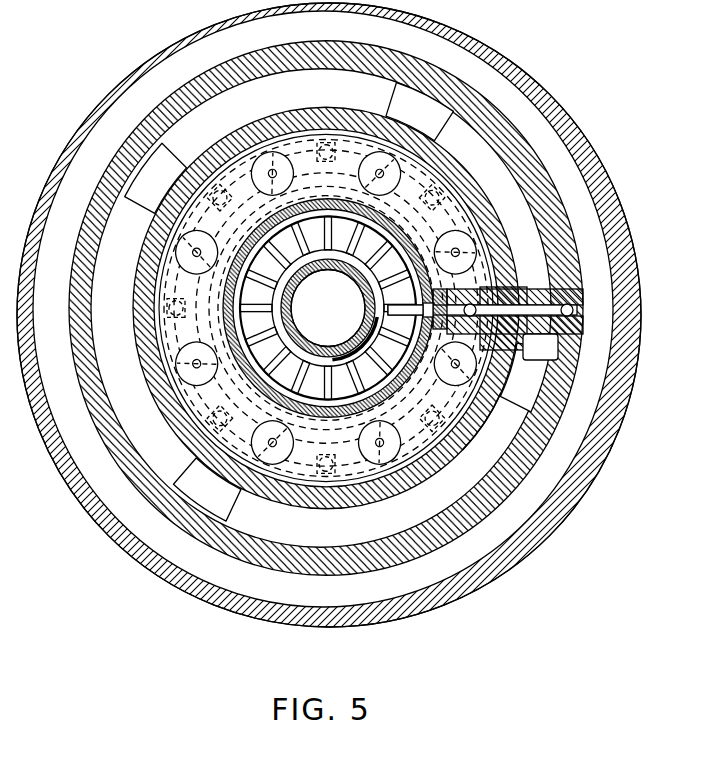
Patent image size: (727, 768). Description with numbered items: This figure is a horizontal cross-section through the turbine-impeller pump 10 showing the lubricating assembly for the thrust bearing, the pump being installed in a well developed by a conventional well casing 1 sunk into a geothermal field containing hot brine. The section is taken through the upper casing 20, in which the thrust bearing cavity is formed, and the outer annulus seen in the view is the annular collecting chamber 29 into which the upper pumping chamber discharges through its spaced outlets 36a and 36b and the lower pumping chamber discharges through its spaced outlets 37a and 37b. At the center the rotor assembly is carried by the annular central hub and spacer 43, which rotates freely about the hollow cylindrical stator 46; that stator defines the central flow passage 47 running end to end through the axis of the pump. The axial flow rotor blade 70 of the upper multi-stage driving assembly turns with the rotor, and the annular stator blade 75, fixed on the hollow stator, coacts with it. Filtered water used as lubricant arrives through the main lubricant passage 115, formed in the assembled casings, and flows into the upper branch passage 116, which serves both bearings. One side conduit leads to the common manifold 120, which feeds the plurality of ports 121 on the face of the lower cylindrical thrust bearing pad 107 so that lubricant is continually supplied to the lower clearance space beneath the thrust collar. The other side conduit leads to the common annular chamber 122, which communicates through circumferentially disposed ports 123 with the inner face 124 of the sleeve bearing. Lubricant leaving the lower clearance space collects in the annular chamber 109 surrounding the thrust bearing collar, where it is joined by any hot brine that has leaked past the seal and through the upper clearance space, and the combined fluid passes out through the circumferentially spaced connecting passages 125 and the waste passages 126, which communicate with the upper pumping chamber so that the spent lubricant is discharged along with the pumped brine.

The well casing 1 is at (612, 168).
The turbine-impeller pump 10 is at (474, 76).
The upper casing 20 is at (493, 122).
The annular collecting chamber 29 is at (497, 157).
The outlet 36a is at (168, 152).
The outlet 36b is at (537, 402).
The outlet 37a is at (180, 478).
The outlet 37b is at (433, 100).
The annular central hub and spacer 43 is at (314, 378).
The hollow cylindrical stator 46 is at (333, 267).
The central flow passage 47 is at (337, 338).
The axial flow rotor blade 70 is at (400, 350).
The annular stator blade 75 is at (380, 302).
The lower cylindrical thrust bearing pad 107 is at (480, 417).
The annular chamber 109 is at (507, 367).
The main lubricant passage 115 is at (583, 300).
The upper branch passage 116 is at (531, 309).
The common manifold 120 is at (463, 217).
The ports 121 is at (272, 160).
The common annular chamber 122 is at (443, 290).
The circumferentially disposed ports 123 is at (420, 315).
The inner face of the sleeve bearing 124 is at (410, 281).
The connecting passages 125 is at (197, 438).
The waste passages 126 is at (190, 402).